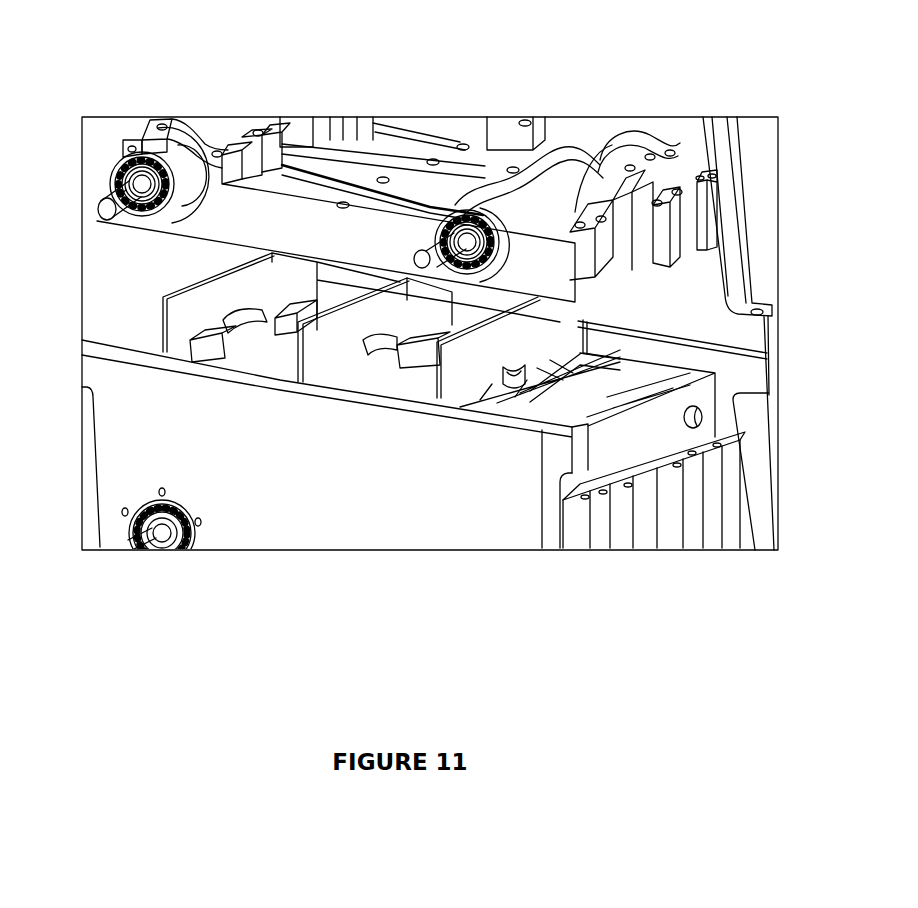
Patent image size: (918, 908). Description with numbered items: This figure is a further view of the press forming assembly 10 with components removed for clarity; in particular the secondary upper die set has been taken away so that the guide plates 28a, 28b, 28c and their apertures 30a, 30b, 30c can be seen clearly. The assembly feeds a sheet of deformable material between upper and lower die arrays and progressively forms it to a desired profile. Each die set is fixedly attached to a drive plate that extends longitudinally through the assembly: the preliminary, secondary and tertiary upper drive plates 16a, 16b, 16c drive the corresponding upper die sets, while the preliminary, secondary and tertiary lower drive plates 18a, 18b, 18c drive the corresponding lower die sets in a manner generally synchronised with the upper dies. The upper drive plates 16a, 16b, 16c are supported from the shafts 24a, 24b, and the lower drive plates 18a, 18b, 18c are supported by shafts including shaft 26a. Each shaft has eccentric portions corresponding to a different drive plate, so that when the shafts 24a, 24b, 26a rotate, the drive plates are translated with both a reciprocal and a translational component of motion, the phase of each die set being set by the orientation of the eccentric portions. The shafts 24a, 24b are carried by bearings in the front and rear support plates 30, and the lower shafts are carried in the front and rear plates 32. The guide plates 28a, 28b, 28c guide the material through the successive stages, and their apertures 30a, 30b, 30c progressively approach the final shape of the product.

The press forming assembly 10 is at (145, 600).
The preliminary upper drive plate 16a is at (553, 267).
The secondary upper drive plate 16b is at (622, 205).
The tertiary upper drive plate 16c is at (653, 207).
The preliminary lower drive plate 18a is at (580, 545).
The secondary lower drive plate 18b is at (618, 550).
The tertiary lower drive plate 18c is at (688, 552).
The shaft 24a is at (99, 197).
The shaft 24b is at (427, 258).
The shaft 26a is at (127, 549).
The guide plate 28a is at (181, 308).
The guide plate 28b is at (315, 350).
The guide plate 28c is at (453, 377).
The front and rear support plates 30 is at (726, 130).
The aperture 30a is at (237, 322).
The aperture 30b is at (375, 343).
The aperture 30c is at (513, 390).
The front and rear plates 32 is at (437, 530).